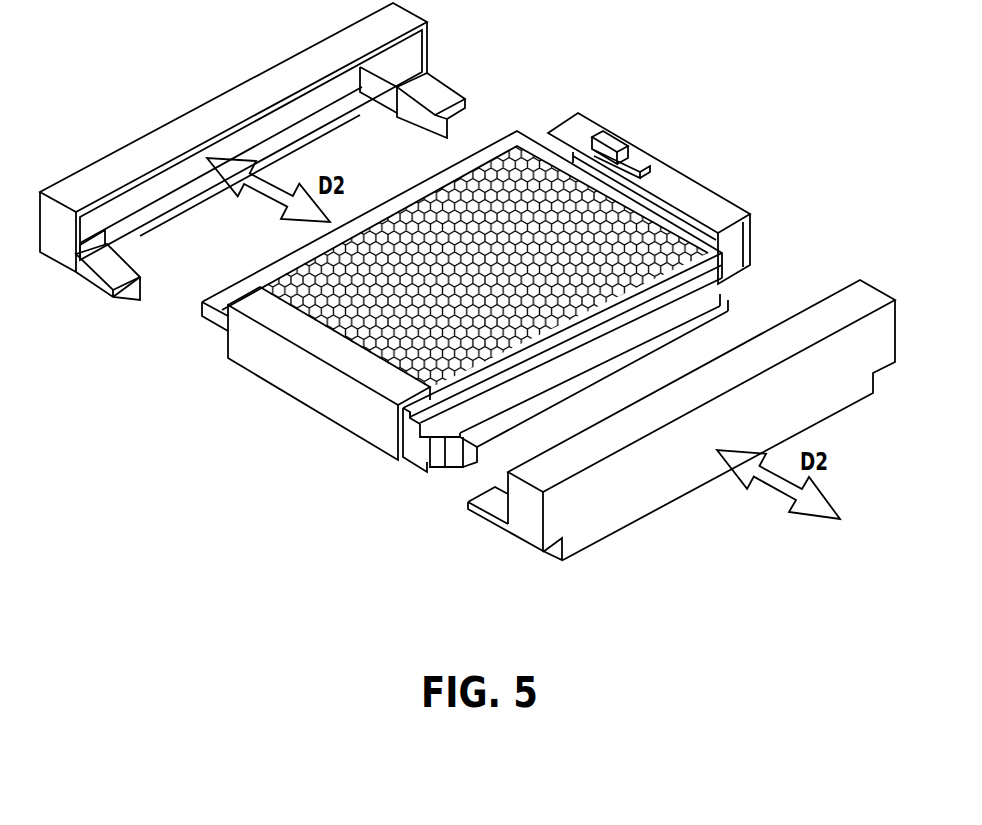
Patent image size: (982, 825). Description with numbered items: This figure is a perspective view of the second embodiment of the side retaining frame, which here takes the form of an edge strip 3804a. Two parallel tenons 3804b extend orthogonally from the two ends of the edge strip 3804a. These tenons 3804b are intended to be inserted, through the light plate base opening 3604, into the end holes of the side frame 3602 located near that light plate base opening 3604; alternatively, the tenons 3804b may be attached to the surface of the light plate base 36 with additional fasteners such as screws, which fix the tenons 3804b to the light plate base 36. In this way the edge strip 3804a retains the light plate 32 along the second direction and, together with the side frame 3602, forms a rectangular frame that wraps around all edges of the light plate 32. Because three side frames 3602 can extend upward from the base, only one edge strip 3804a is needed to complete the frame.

The light plate 32 is at (648, 232).
The light plate base 36 is at (501, 301).
The side frame 3602 is at (365, 420).
The light plate base opening 3604 is at (693, 303).
The edge strip 3804a is at (250, 97).
The tenons 3804b is at (432, 90).